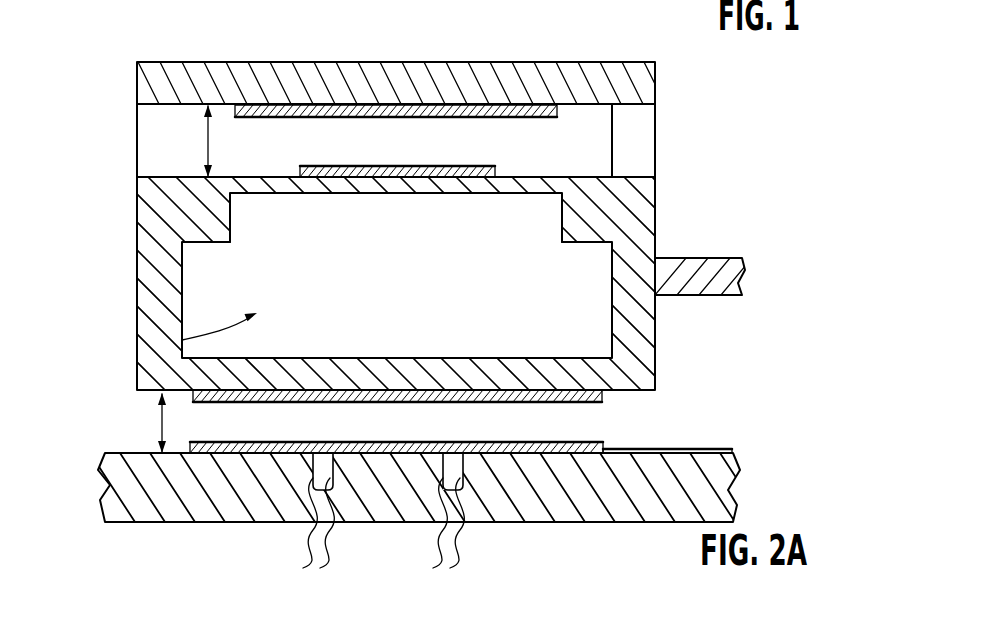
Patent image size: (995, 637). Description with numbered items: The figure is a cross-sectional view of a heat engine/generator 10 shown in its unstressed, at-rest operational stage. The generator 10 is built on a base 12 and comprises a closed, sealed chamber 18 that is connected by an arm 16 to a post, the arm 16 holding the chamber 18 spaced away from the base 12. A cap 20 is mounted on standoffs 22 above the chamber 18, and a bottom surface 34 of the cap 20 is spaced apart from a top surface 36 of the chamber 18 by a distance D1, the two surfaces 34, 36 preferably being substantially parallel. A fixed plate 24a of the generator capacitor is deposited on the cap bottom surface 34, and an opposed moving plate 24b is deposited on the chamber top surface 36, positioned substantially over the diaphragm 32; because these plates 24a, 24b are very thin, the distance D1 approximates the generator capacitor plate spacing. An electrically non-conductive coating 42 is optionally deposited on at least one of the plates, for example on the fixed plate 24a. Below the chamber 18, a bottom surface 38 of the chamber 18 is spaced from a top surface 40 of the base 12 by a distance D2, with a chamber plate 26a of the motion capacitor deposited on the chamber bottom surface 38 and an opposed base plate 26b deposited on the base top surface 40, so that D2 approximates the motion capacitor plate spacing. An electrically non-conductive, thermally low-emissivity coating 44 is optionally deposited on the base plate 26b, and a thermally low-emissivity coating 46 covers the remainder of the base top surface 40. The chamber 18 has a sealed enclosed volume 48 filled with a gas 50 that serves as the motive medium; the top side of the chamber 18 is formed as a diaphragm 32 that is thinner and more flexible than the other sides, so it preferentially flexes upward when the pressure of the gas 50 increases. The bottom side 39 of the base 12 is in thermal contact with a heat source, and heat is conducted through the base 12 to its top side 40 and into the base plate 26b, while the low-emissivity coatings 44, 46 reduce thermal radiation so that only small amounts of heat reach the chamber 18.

The heat engine/generator 10 is at (246, 45).
The base 12 is at (105, 474).
The arm 16 is at (738, 257).
The chamber 18 is at (136, 213).
The cap 20 is at (165, 62).
The standoffs 22 is at (150, 145).
The fixed plate of the generator capacitor 24a is at (558, 112).
The moving plate of the generator capacitor 24b is at (497, 171).
The chamber plate of the motion capacitor 26a is at (603, 394).
The base plate of the motion capacitor 26b is at (607, 450).
The diaphragm 32 is at (271, 196).
The bottom surface of the cap 34 is at (188, 107).
The top surface of the chamber 36 is at (183, 176).
The bottom surface of the chamber 38 is at (147, 394).
The bottom side of the base 39 is at (233, 524).
The top surface of the base 40 is at (139, 451).
The electrically non-conductive coating 42 is at (440, 128).
The electrically non-conductive, thermally low-emissivity coating 44 is at (567, 443).
The thermally low-emissivity coating 46 is at (720, 448).
The enclosed volume 48 is at (394, 292).
The gas 50 is at (182, 340).
The distance D1 is at (221, 141).
The distance D2 is at (176, 423).